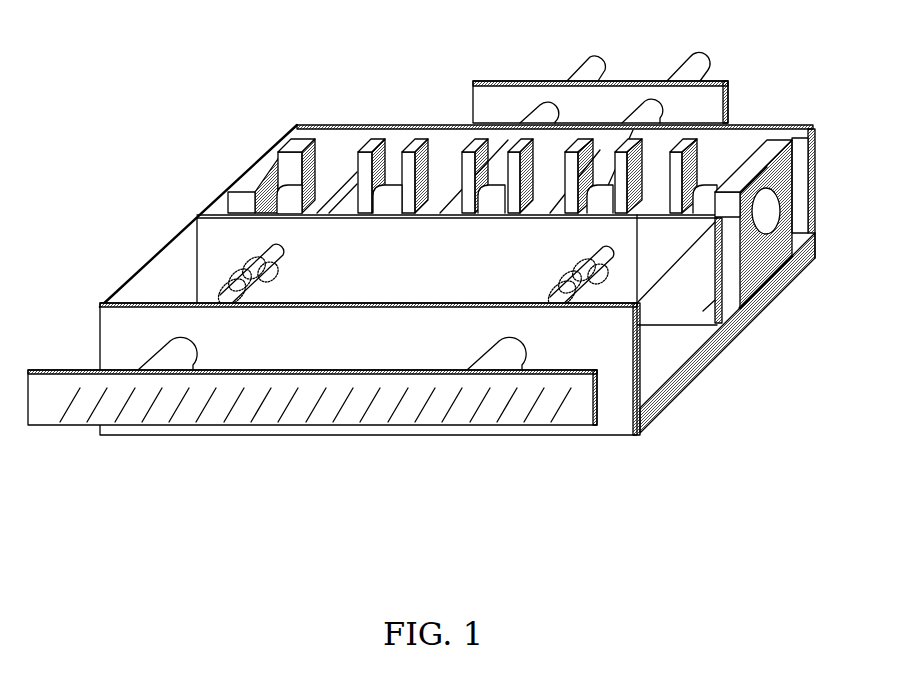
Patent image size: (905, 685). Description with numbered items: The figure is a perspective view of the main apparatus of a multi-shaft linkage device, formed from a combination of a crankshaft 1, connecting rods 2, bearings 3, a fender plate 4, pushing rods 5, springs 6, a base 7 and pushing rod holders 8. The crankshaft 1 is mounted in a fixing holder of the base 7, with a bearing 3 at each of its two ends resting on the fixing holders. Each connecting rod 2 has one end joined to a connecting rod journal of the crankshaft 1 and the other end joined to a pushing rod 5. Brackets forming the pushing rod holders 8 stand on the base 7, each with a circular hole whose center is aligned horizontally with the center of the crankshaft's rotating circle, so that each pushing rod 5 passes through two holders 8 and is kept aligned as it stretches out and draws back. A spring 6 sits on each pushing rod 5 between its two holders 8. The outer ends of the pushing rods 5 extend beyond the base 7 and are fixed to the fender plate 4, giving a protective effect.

The crankshaft 1 is at (283, 177).
The connecting rod 2 is at (338, 157).
The bearing 3 is at (768, 210).
The fender plate 4 is at (275, 418).
The pushing rod 5 is at (160, 357).
The spring 6 is at (233, 280).
The base 7 is at (803, 120).
The pushing rod holder 8 is at (623, 427).